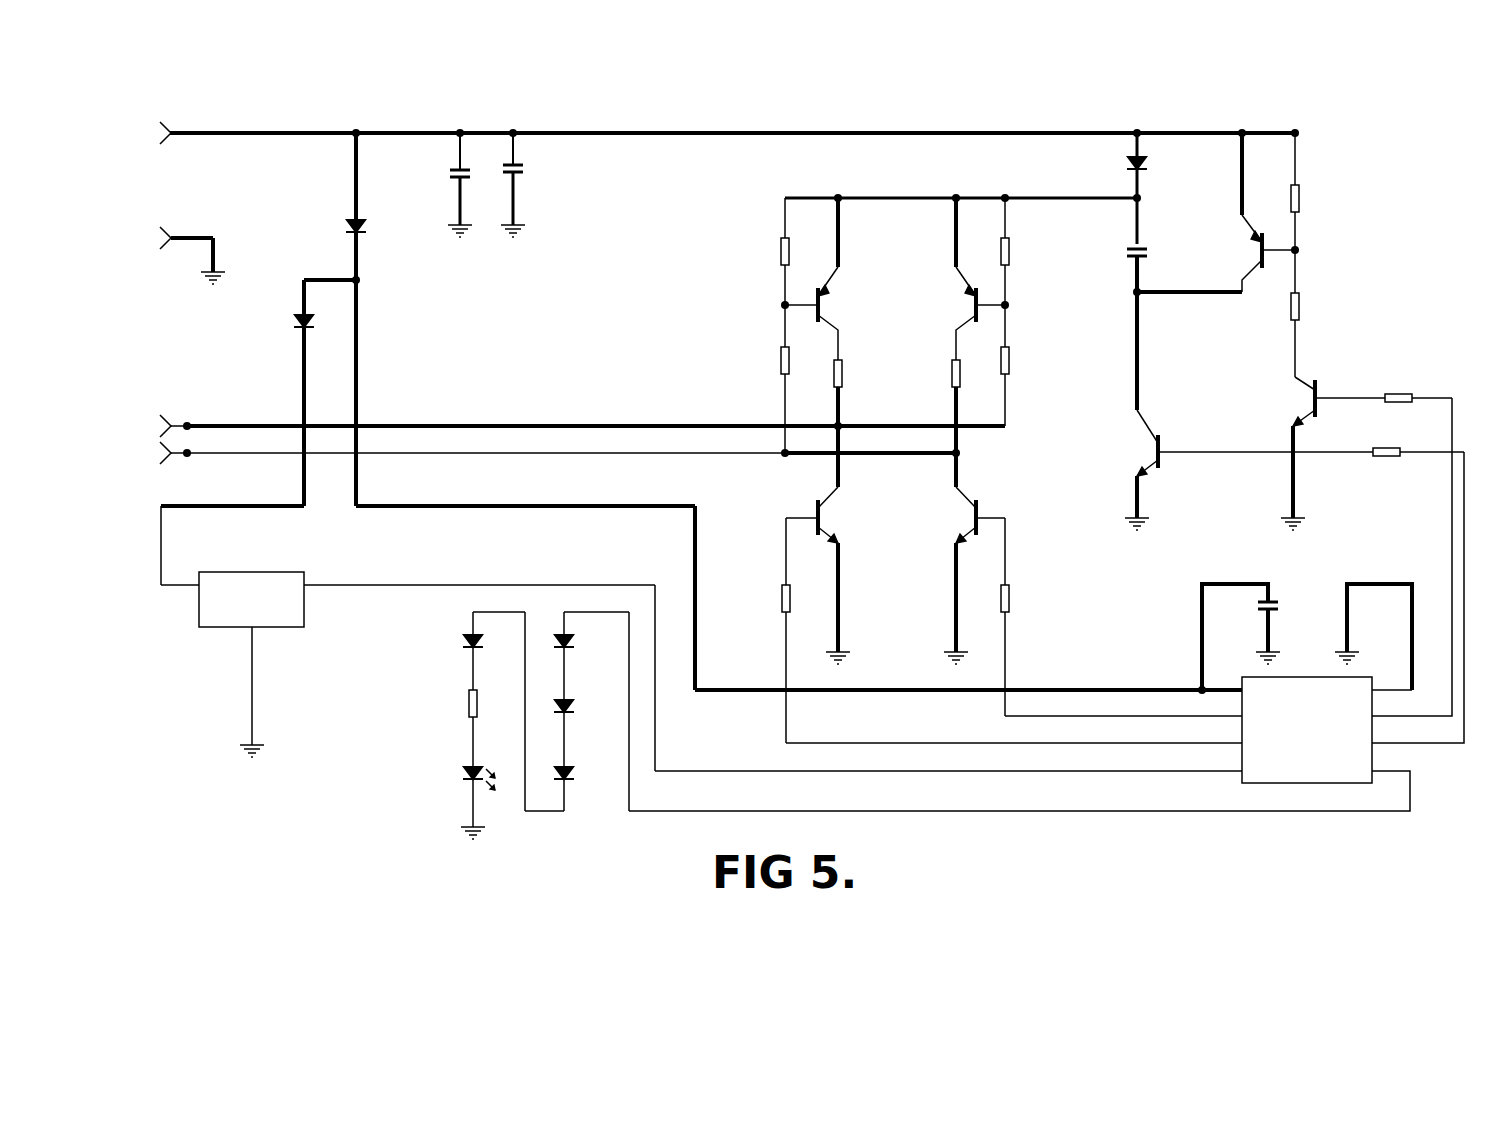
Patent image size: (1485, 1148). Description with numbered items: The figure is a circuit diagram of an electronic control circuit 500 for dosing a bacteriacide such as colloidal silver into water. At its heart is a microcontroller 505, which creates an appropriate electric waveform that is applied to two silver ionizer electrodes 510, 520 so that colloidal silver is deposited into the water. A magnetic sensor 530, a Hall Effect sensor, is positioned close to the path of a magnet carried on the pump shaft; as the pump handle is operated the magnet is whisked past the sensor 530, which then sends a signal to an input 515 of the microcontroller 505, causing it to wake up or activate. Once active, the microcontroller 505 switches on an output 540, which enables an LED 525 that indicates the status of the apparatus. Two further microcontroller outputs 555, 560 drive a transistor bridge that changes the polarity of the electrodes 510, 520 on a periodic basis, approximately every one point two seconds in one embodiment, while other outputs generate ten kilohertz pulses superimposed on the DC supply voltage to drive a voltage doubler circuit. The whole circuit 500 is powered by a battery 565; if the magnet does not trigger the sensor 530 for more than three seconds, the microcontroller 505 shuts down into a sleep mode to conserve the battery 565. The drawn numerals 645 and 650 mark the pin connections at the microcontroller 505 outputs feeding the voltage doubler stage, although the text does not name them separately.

The electronic control circuit 500 is at (782, 480).
The microcontroller 505 is at (1305, 725).
The silver ionizer electrode 510 is at (578, 418).
The input of microcontroller 515 is at (948, 678).
The silver ionizer electrode 520 is at (550, 464).
The LED 525 is at (440, 771).
The magnetic sensor 530 is at (408, 649).
The output of microcontroller 540 is at (1039, 791).
The microcontroller output 555 is at (1014, 734).
The microcontroller output 560 is at (1123, 707).
The battery 565 is at (170, 203).
The output GP0 645 is at (1412, 557).
The output GP1 650 is at (1418, 597).